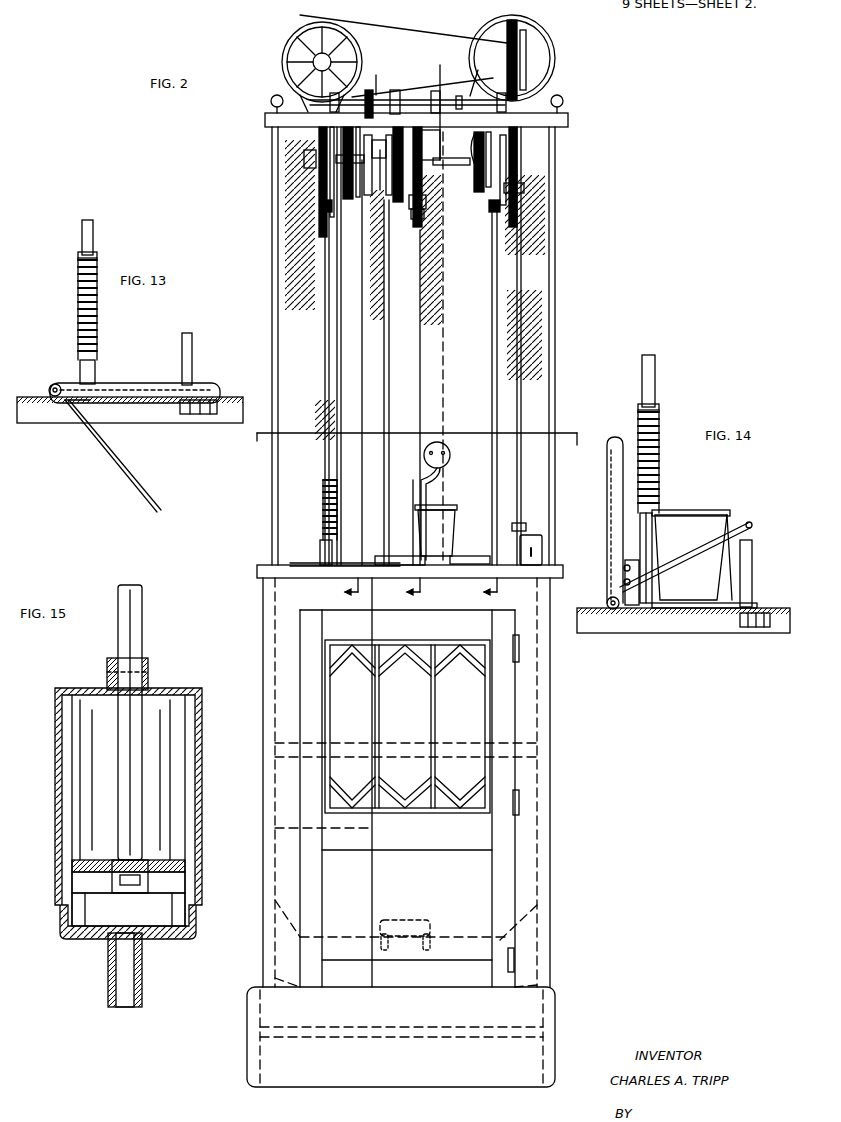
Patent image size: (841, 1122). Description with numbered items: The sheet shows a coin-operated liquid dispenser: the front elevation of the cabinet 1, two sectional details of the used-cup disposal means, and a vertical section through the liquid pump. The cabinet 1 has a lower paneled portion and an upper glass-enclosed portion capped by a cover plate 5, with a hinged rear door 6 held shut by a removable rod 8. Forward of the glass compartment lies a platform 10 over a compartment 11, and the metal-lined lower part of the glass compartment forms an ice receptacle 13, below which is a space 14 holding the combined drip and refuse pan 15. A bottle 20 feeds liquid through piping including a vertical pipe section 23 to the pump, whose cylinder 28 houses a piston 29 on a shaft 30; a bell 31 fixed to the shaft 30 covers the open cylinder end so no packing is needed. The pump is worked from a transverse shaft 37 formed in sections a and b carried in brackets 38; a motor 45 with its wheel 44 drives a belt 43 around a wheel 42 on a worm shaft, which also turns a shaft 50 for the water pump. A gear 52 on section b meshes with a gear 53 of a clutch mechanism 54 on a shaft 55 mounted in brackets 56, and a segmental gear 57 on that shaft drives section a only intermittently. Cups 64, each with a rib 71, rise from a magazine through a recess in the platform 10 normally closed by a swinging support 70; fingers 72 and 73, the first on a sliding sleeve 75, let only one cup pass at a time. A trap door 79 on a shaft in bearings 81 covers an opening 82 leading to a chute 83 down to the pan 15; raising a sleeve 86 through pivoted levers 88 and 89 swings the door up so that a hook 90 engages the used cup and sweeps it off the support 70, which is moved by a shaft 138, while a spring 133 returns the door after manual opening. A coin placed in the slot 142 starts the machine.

In FIG. 2, the cabinet 1 is at (551, 785).
In FIG. 2, the cover plate 5 is at (266, 122).
In FIG. 2, the door 6 is at (488, 310).
In FIG. 2, the removable rod 8 is at (448, 100).
In FIG. 13, the platform 10 is at (46, 410).
In FIG. 14, the platform 10 is at (612, 624).
In FIG. 2, the compartment 11 is at (368, 98).
In FIG. 2, the ice receptacle 13 is at (524, 718).
In FIG. 2, the space 14 is at (478, 891).
In FIG. 2, the combined drip and refuse pan 15 is at (514, 940).
In FIG. 2, the bottle 20 is at (401, 92).
In FIG. 15, the vertical pipe section 23 is at (143, 990).
In FIG. 15, the cylinder 28 is at (58, 920).
In FIG. 15, the piston 29 is at (72, 876).
In FIG. 2, the shaft 30 is at (518, 420).
In FIG. 15, the shaft 30 is at (143, 628).
In FIG. 15, the bell 31 is at (55, 774).
In FIG. 2, the shaft 37 is at (445, 147).
In FIG. 2, the brackets 38 is at (448, 101).
In FIG. 2, the wheel 42 is at (300, 45).
In FIG. 2, the belt 43 is at (448, 38).
In FIG. 2, the wheel 44 is at (528, 56).
In FIG. 2, the motor 45 is at (548, 78).
In FIG. 2, the shaft 50 is at (346, 354).
In FIG. 2, the gear 52 is at (370, 87).
In FIG. 2, the gear 53 is at (388, 188).
In FIG. 2, the clutch mechanism 54 is at (368, 187).
In FIG. 2, the shaft 55 is at (462, 170).
In FIG. 2, the brackets 56 is at (304, 152).
In FIG. 2, the segmental gear 57 is at (530, 190).
In FIG. 2, the cups 64 is at (452, 522).
In FIG. 14, the cups 64 is at (704, 510).
In FIG. 2, the swinging support 70 is at (398, 556).
In FIG. 14, the swinging support 70 is at (690, 610).
In FIG. 14, the rib 71 is at (726, 510).
In FIG. 2, the finger 72 is at (470, 556).
In FIG. 2, the finger 73 is at (470, 572).
In FIG. 2, the sleeve 75 is at (452, 460).
In FIG. 2, the trap door 79 is at (290, 562).
In FIG. 13, the trap door 79 is at (128, 384).
In FIG. 14, the trap door 79 is at (626, 439).
In FIG. 13, the bearings 81 is at (52, 385).
In FIG. 14, the bearings 81 is at (606, 601).
In FIG. 13, the opening 82 is at (207, 415).
In FIG. 14, the opening 82 is at (755, 628).
In FIG. 2, the chute 83 is at (290, 672).
In FIG. 2, the sleeve 86 is at (324, 360).
In FIG. 13, the sleeve 86 is at (81, 233).
In FIG. 14, the sleeve 86 is at (655, 380).
In FIG. 14, the pivoted lever 88 is at (630, 600).
In FIG. 2, the pivoted lever 89 is at (319, 555).
In FIG. 14, the pivoted lever 89 is at (643, 565).
In FIG. 13, the hook 90 is at (143, 498).
In FIG. 14, the hook 90 is at (749, 520).
In FIG. 2, the spring 133 is at (322, 520).
In FIG. 13, the spring 133 is at (78, 313).
In FIG. 14, the spring 133 is at (656, 447).
In FIG. 2, the shaft 138 is at (390, 422).
In FIG. 13, the shaft 138 is at (192, 352).
In FIG. 14, the shaft 138 is at (753, 566).
In FIG. 2, the slot 142 is at (542, 545).
In FIG. 2, the shaft section a is at (475, 75).
In FIG. 2, the shaft section b is at (376, 77).